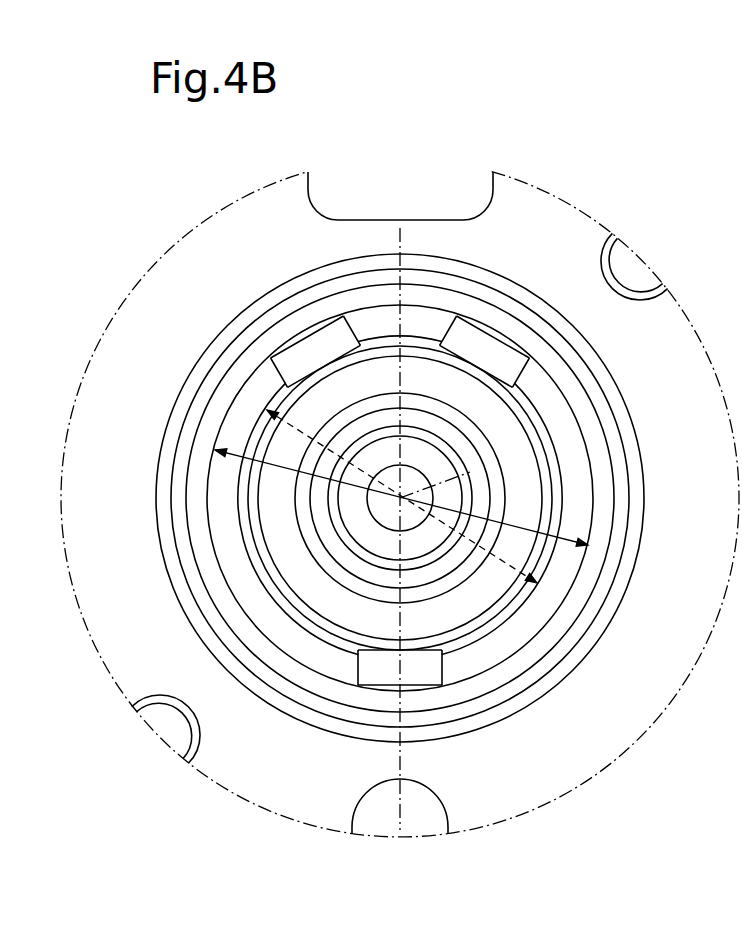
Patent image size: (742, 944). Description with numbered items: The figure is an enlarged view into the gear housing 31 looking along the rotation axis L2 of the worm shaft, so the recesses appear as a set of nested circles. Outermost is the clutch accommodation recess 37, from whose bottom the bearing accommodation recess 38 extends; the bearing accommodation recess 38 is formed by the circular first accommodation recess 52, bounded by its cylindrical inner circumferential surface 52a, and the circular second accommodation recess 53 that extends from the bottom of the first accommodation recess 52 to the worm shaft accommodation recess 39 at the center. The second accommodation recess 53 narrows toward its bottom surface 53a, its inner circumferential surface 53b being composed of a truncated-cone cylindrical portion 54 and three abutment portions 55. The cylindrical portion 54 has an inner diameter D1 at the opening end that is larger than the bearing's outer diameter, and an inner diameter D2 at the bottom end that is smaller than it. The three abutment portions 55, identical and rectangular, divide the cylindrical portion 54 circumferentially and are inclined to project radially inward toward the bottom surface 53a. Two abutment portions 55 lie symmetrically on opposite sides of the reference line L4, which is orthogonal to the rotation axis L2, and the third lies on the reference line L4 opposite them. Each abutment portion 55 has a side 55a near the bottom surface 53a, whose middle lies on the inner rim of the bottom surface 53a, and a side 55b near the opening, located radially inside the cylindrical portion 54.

The gear housing 31 is at (525, 792).
The clutch accommodation recess 37 is at (243, 327).
The bearing accommodation recess 38 is at (230, 363).
The worm shaft accommodation recess 39 is at (333, 634).
The first accommodation recess 52 is at (383, 498).
The inner circumferential surface of first accommodation recess 52a is at (566, 346).
The second accommodation recess 53 is at (339, 527).
The bottom surface of second accommodation recess 53a is at (300, 622).
The inner circumferential surface of second accommodation recess 53b is at (254, 607).
The cylindrical portion 54 is at (576, 583).
The abutment portion 55 is at (402, 507).
The side of abutment portion close to bottom surface 55a is at (322, 372).
The side of abutment portion close to opening 55b is at (293, 342).
The inner diameter of cylindrical portion at opening end D1 is at (278, 466).
The inner diameter of cylindrical portion at bottom end D2 is at (535, 588).
The rotation axis of worm shaft L2 is at (470, 472).
The reference line L4 is at (403, 238).